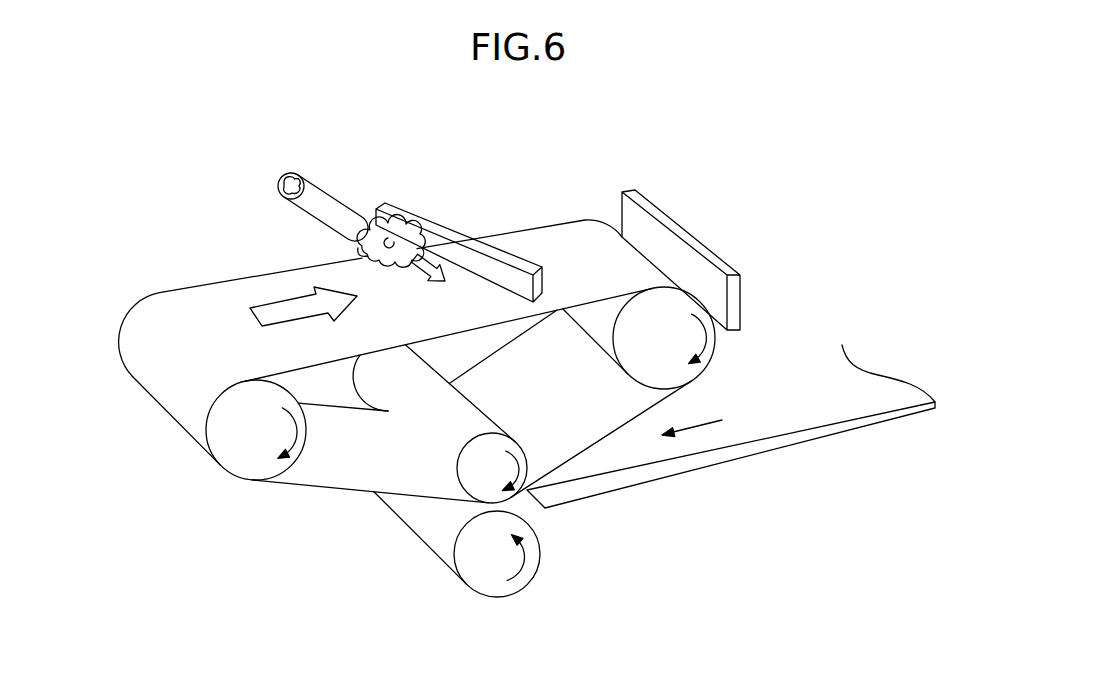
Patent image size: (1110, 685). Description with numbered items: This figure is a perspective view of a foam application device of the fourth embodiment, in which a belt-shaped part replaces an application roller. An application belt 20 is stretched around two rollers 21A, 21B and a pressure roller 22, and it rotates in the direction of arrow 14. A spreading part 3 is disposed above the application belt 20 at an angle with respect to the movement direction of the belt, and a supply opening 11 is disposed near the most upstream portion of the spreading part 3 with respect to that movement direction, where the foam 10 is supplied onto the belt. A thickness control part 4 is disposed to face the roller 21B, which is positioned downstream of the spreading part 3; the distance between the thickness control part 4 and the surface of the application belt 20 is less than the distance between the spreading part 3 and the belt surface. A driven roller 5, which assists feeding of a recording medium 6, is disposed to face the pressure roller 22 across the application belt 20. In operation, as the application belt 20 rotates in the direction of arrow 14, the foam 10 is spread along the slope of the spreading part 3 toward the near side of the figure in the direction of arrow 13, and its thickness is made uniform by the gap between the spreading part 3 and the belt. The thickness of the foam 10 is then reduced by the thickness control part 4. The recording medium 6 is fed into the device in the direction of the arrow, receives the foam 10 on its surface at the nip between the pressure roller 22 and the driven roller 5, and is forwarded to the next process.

The spreading part 3 is at (433, 232).
The thickness control part 4 is at (680, 233).
The driven roller 5 is at (527, 575).
The recording medium 6 is at (704, 452).
The foam 10 is at (384, 248).
The supply opening 11 is at (338, 206).
The arrow 13 is at (430, 270).
The arrow 14 is at (282, 305).
The application belt 20 is at (215, 295).
The roller 21A is at (240, 452).
The roller 21B is at (707, 352).
The pressure roller 22 is at (473, 477).